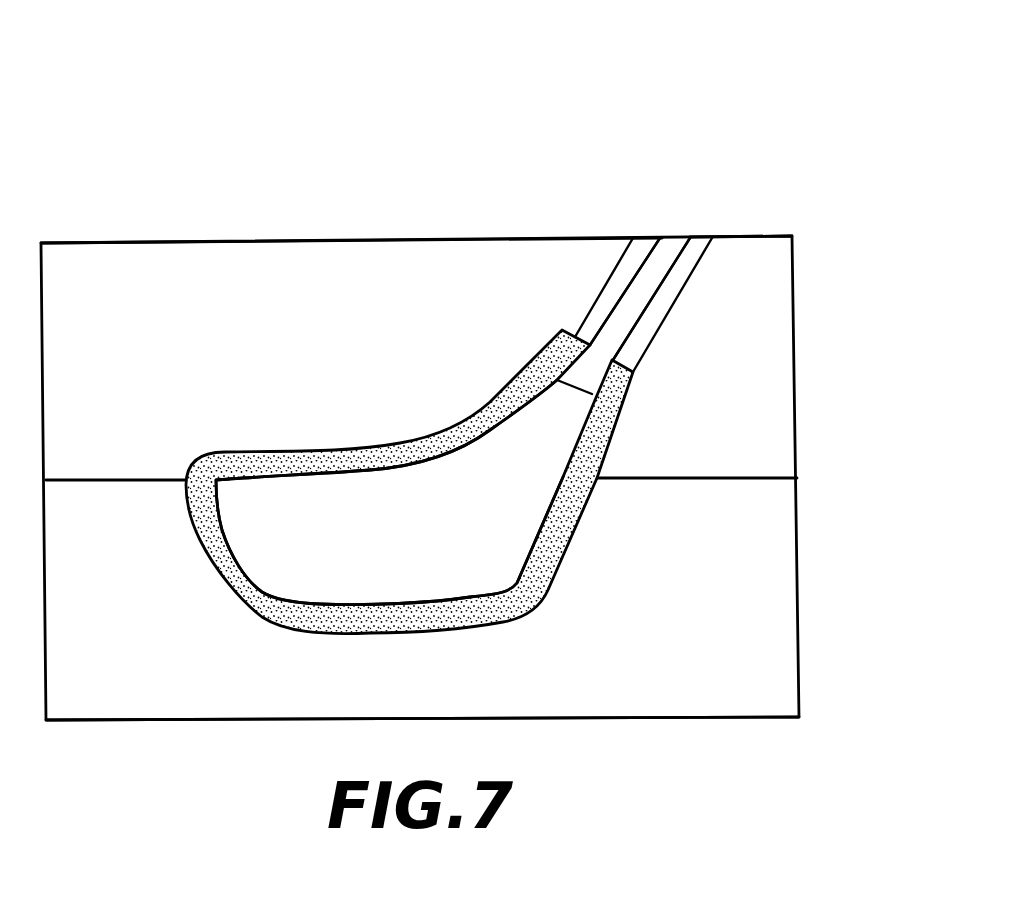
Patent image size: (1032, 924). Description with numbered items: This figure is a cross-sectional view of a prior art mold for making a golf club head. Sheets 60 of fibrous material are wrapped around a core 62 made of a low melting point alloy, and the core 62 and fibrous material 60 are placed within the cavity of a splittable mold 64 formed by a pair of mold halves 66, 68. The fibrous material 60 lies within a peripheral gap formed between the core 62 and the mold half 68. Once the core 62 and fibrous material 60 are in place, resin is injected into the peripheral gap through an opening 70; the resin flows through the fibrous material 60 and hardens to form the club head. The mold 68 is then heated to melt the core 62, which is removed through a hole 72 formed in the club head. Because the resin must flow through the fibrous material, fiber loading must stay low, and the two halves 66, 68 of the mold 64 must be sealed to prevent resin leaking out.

The sheets of fibrous material 60 is at (533, 568).
The core 62 is at (310, 582).
The splittable mold 64 is at (515, 100).
The mold half 66 is at (794, 347).
The mold half 68 is at (799, 582).
The opening 70 is at (697, 245).
The hole 72 is at (668, 243).